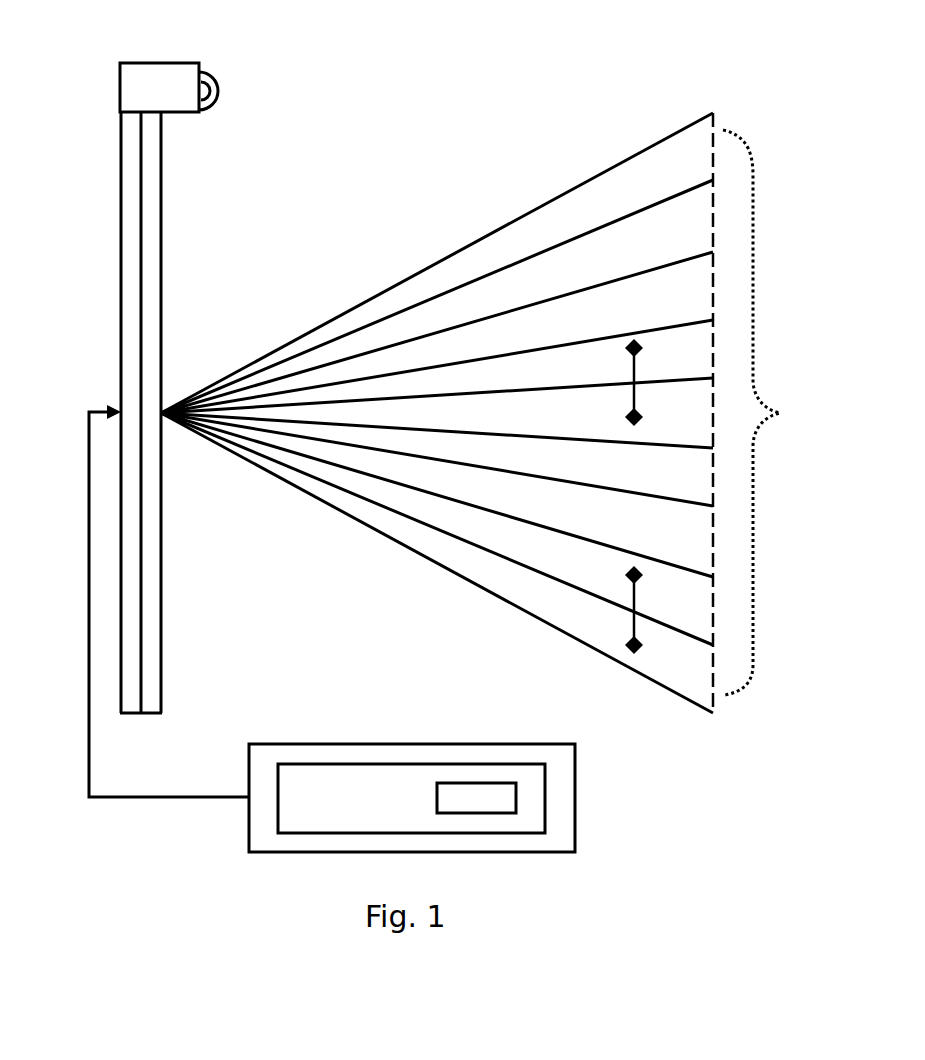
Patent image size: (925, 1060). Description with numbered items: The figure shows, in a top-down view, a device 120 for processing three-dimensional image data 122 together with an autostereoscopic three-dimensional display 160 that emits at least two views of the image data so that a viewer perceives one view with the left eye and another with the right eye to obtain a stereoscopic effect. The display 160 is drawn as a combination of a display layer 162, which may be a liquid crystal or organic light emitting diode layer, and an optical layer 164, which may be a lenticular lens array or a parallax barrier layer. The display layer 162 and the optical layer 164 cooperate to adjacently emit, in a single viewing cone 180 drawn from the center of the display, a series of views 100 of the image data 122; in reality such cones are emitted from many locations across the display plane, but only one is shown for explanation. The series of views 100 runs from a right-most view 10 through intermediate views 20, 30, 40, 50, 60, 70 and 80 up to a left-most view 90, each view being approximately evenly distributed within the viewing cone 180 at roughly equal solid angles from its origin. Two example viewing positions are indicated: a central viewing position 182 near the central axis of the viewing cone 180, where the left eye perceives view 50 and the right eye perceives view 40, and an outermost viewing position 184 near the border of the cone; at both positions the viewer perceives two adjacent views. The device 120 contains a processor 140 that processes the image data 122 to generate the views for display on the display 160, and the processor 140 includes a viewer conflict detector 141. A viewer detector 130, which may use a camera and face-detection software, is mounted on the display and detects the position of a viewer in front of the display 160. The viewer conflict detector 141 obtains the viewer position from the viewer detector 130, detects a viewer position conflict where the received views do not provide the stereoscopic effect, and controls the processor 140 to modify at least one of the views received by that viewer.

The right-most view 10 is at (691, 171).
The view 20 is at (691, 232).
The view 30 is at (691, 301).
The view 40 is at (691, 361).
The view 50 is at (691, 421).
The view 60 is at (691, 492).
The view 70 is at (691, 552).
The view 80 is at (691, 621).
The left-most view 90 is at (691, 681).
The series of views 100 is at (768, 413).
The device 120 is at (575, 792).
The 3D image data 122 is at (162, 803).
The viewer detector 130 is at (188, 63).
The processor 140 is at (361, 810).
The viewer conflict detector 141 is at (493, 810).
The 3D display 160 is at (104, 121).
The display layer 162 is at (132, 635).
The optical layer 164 is at (148, 673).
The viewing cone 180 is at (322, 508).
The central viewing position 182 is at (625, 398).
The outermost viewing position 184 is at (622, 588).